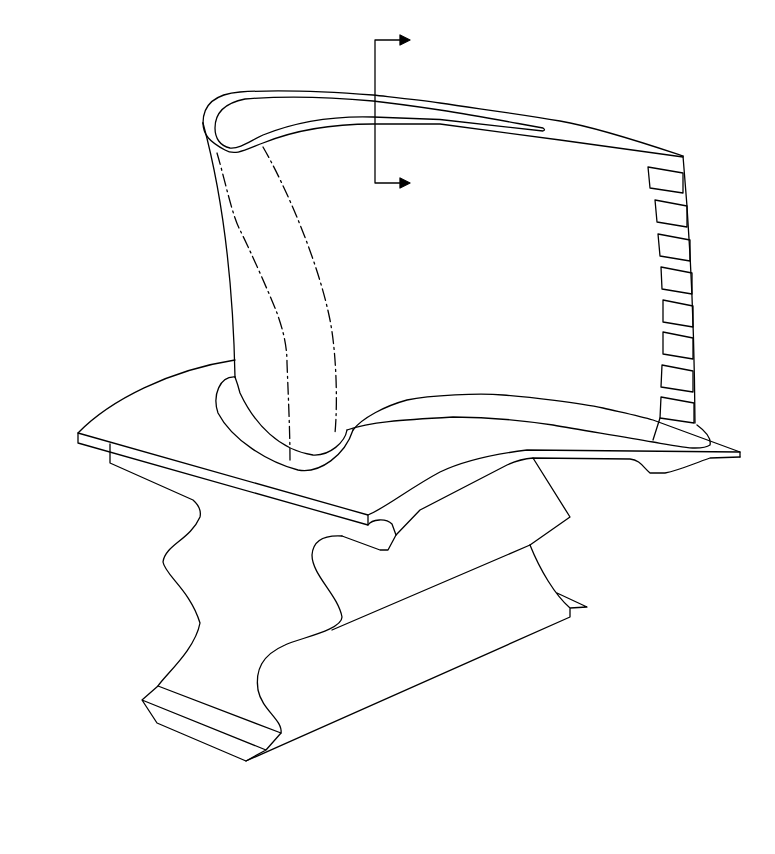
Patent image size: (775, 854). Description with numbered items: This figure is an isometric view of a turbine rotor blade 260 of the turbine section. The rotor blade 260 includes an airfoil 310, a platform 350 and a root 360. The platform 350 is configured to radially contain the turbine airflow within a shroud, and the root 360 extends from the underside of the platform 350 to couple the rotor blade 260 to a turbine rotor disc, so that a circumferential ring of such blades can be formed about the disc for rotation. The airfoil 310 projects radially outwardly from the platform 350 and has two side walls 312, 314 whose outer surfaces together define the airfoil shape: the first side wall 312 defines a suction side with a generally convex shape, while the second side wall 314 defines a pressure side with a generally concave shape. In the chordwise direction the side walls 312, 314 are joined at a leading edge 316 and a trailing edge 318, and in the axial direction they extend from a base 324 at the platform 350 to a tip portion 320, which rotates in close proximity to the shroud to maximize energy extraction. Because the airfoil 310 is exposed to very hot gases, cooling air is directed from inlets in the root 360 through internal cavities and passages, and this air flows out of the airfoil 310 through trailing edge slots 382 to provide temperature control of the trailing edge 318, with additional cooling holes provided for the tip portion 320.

The rotor blade 260 is at (655, 99).
The airfoil 310 is at (443, 147).
The first side wall 312 is at (230, 293).
The second side wall 314 is at (491, 302).
The leading edge 316 is at (237, 198).
The trailing edge 318 is at (693, 220).
The tip portion 320 is at (200, 119).
The base 324 is at (228, 393).
The platform 350 is at (427, 467).
The root 360 is at (217, 602).
The trailing edge slots 382 is at (683, 313).